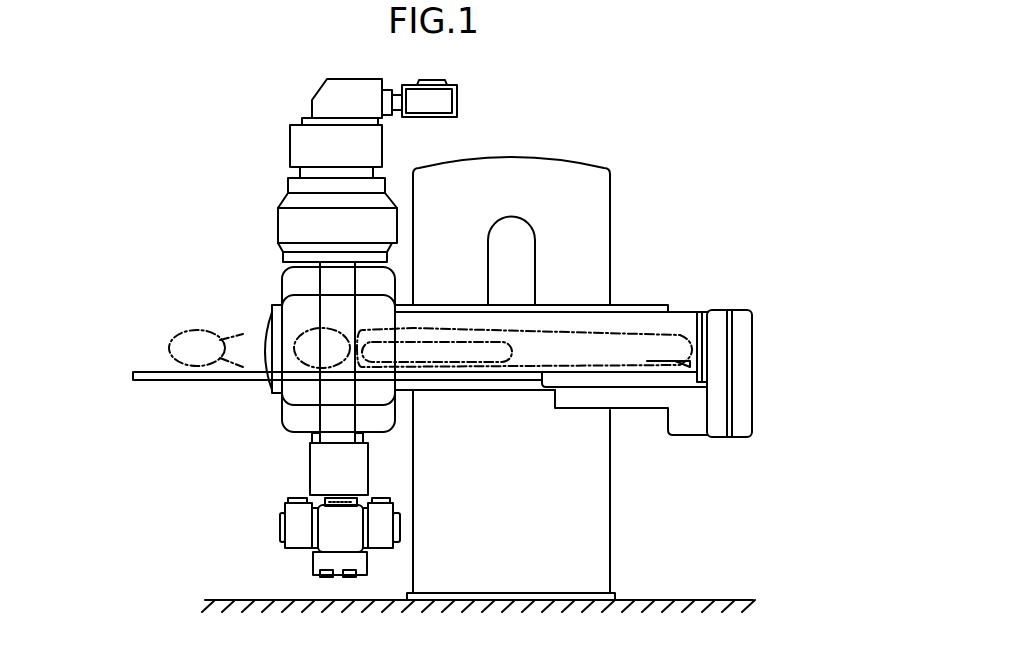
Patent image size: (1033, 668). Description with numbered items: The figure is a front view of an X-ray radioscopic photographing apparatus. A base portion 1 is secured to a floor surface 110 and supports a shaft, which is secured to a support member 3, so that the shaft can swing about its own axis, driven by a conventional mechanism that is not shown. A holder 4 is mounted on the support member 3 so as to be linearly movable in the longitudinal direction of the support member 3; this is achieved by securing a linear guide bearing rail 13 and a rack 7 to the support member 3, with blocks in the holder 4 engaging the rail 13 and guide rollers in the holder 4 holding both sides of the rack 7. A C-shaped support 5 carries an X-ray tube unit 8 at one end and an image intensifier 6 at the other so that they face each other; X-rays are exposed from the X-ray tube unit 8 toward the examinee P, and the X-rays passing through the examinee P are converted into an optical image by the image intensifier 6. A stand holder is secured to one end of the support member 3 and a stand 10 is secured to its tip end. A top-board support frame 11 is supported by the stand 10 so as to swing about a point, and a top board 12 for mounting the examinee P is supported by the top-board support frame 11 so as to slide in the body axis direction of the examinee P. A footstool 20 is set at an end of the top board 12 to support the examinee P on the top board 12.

The base portion 1 is at (610, 195).
The support member 3 is at (268, 322).
The holder 4 is at (282, 417).
The C-shaped support 5 is at (310, 445).
The image intensifier 6 is at (277, 205).
The rack 7 is at (498, 393).
The X-ray tube unit 8 is at (280, 527).
The stand 10 is at (752, 370).
The top-board support frame 11 is at (710, 437).
The top board 12 is at (260, 382).
The linear guide bearing rail 13 is at (648, 305).
The footstool 20 is at (697, 312).
The floor surface 110 is at (710, 600).
The examinee P is at (178, 332).